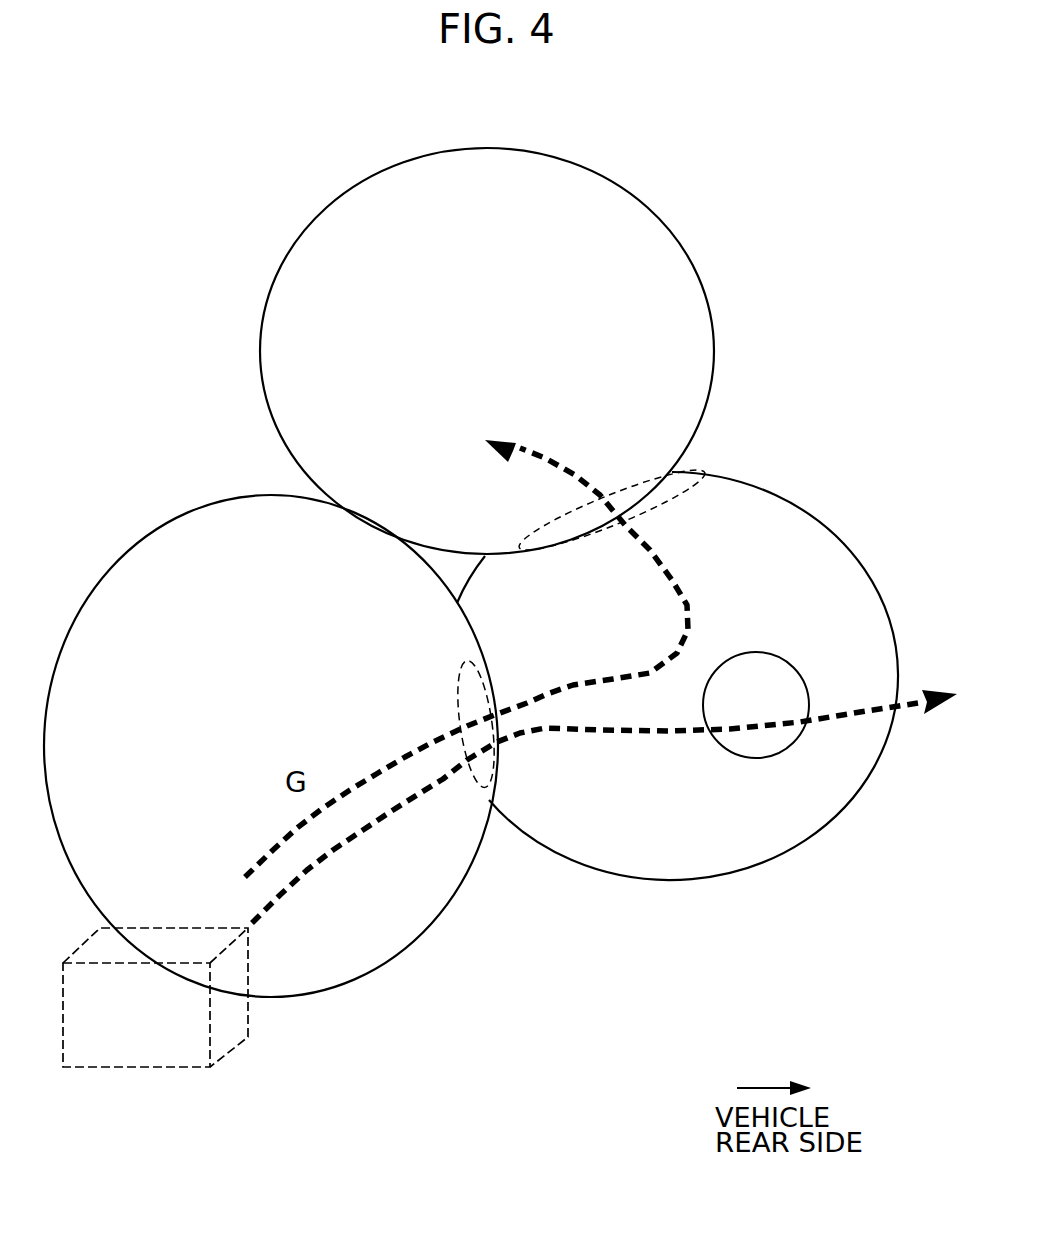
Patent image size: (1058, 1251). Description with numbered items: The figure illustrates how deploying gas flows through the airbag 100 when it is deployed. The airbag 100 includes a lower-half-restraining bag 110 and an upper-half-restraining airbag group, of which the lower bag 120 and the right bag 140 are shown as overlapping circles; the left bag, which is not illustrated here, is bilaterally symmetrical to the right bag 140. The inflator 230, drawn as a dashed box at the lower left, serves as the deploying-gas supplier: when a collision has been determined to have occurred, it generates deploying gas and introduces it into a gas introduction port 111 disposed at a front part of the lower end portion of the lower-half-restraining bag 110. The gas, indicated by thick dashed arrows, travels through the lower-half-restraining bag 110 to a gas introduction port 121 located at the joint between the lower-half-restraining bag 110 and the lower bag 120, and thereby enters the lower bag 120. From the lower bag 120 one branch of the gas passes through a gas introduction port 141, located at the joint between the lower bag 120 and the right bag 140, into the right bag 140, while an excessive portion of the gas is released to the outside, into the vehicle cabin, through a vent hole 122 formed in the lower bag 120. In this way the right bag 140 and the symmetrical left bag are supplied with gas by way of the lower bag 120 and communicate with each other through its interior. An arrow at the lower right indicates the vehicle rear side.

The airbag 100 is at (143, 208).
The lower-half-restraining bag 110 is at (148, 538).
The gas introduction port 111 is at (203, 930).
The lower bag 120 is at (797, 836).
The gas introduction port 121 is at (482, 770).
The vent hole 122 is at (790, 740).
The right bag 140 is at (692, 273).
The gas introduction port 141 is at (640, 488).
The inflator 230 is at (143, 1067).